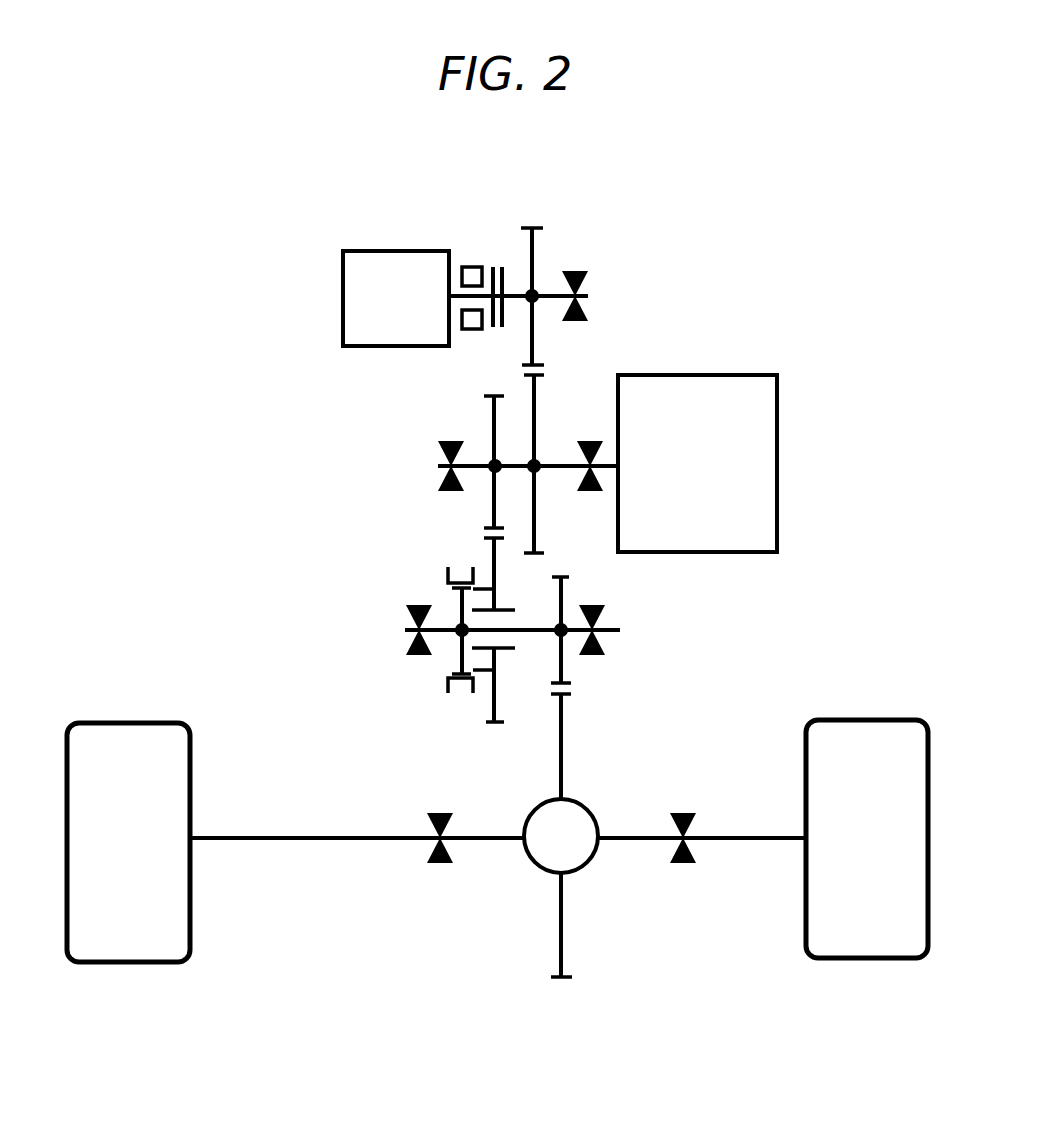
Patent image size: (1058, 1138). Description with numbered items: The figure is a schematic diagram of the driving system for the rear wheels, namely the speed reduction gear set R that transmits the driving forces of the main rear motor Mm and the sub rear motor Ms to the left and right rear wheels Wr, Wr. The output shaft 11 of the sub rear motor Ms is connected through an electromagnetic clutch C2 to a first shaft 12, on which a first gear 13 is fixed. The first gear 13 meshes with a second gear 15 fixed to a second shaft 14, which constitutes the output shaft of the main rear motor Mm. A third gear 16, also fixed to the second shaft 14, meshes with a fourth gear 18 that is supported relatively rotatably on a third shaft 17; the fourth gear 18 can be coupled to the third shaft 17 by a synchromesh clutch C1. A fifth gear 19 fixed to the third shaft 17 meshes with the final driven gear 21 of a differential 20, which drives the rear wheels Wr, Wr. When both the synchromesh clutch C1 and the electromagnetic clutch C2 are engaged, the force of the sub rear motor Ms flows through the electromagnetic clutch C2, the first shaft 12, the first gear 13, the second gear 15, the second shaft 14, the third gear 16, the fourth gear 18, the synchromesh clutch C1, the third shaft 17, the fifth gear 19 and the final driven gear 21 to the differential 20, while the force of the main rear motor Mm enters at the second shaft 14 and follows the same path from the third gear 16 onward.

The output shaft 11 is at (452, 300).
The first shaft 12 is at (562, 296).
The first gear 13 is at (520, 228).
The second shaft 14 is at (566, 462).
The second gear 15 is at (540, 553).
The third gear 16 is at (485, 396).
The third shaft 17 is at (530, 634).
The fourth gear 18 is at (494, 724).
The fifth gear 19 is at (570, 577).
The differential 20 is at (597, 799).
The final driven gear 21 is at (570, 685).
The synchromesh clutch C1 is at (436, 597).
The electromagnetic clutch C2 is at (456, 249).
The sub rear motor Ms is at (343, 297).
The main rear motor Mm is at (778, 466).
The rear wheels Wr is at (128, 723).
The speed reduction gear set R is at (318, 488).